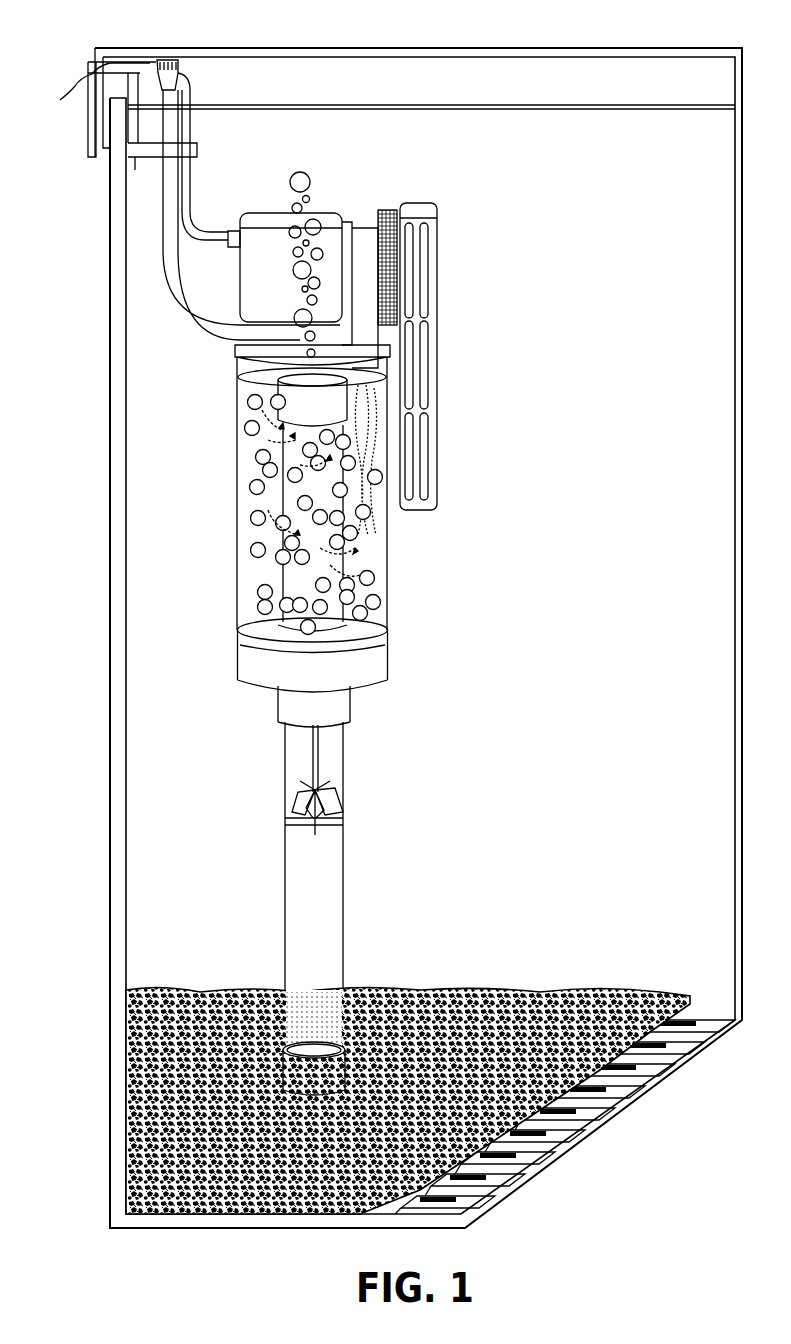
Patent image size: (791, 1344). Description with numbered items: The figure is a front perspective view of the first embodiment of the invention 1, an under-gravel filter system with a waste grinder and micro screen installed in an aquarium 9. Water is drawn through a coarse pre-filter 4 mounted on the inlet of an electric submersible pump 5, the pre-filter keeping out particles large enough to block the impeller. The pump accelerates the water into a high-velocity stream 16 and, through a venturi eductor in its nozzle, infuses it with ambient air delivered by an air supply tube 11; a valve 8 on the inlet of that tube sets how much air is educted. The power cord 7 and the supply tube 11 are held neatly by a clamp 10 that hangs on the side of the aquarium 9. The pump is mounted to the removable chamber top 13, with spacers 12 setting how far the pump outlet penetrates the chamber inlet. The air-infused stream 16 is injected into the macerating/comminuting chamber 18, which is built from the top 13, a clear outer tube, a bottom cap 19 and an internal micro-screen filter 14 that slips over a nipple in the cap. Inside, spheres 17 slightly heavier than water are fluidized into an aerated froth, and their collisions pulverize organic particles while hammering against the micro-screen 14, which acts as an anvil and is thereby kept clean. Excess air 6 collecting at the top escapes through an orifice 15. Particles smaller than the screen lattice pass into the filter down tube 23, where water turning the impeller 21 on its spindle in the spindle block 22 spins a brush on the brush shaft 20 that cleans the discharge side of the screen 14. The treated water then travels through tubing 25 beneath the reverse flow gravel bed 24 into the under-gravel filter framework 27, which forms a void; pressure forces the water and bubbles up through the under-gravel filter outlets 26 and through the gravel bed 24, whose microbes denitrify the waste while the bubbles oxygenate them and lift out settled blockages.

The first embodiment of the invention 1 is at (444, 356).
The coarse pre-filter 4 is at (440, 344).
The electric submersible pump 5 is at (336, 216).
The excess air 6 is at (310, 182).
The power cord 7 is at (190, 199).
The valve 8 is at (165, 60).
The aquarium 9 is at (700, 48).
The clamp 10 is at (88, 86).
The air supply tube 11 is at (160, 228).
The spacers 12 is at (237, 347).
The macerating/comminuting chamber top 13 is at (306, 485).
The micro-screen filter 14 is at (262, 500).
The orifice 15 is at (350, 373).
The high-velocity stream 16 is at (370, 419).
The spheres 17 is at (378, 521).
The macerating/comminuting chamber 18 is at (388, 558).
The bottom cap 19 is at (390, 655).
The brush shaft 20 is at (320, 757).
The impeller 21 is at (340, 798).
The spindle block 22 is at (285, 818).
The filter down tube 23 is at (285, 867).
The reverse flow gravel bed 24 is at (430, 990).
The tubing 25 is at (312, 1010).
The under-gravel filter outlets 26 is at (600, 1090).
The under-gravel filter framework 27 is at (565, 1117).